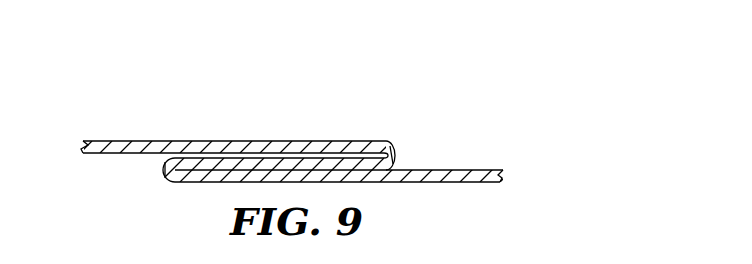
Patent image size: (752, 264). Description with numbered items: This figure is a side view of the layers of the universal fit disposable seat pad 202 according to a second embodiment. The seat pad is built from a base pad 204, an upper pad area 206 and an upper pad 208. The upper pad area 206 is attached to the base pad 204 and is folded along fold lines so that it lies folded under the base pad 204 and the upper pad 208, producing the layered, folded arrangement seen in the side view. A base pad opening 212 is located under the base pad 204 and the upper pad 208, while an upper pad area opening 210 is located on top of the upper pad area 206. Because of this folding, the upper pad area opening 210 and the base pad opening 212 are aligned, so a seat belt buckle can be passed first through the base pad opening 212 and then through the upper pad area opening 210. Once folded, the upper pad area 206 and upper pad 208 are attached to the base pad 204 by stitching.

The universal fit disposable seat pad 202 is at (518, 92).
The base pad 204 is at (125, 140).
The upper pad area 206 is at (478, 168).
The upper pad 208 is at (300, 120).
The upper pad area opening 210 is at (395, 158).
The base pad opening 212 is at (166, 170).